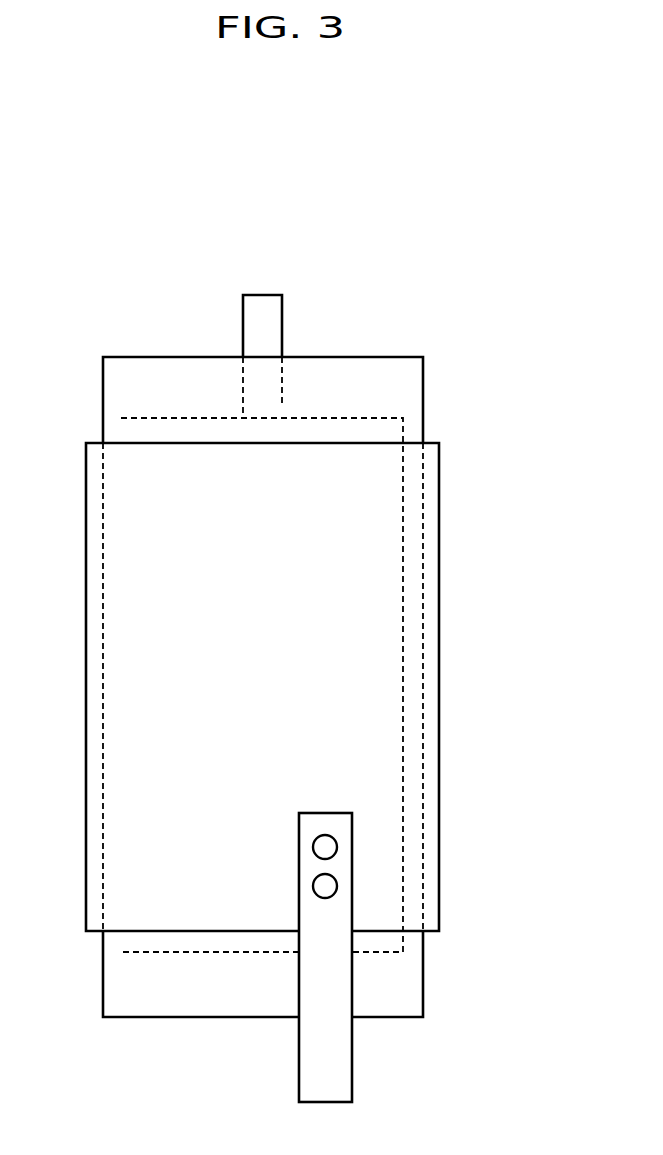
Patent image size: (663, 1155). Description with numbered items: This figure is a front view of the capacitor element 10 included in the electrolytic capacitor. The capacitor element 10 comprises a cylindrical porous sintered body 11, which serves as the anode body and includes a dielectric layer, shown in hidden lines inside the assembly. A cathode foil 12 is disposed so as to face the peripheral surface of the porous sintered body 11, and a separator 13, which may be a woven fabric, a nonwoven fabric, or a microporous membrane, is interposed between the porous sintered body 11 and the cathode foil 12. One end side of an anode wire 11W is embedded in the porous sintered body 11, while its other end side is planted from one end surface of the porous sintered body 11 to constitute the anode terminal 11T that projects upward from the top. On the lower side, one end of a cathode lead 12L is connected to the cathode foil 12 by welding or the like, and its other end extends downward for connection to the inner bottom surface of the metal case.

The capacitor element 10 is at (88, 247).
The porous sintered body 11 is at (383, 434).
The anode terminal 11T is at (270, 325).
The anode wire 11W is at (282, 407).
The cathode foil 12 is at (439, 488).
The cathode lead 12L is at (332, 1064).
The separator 13 is at (423, 399).